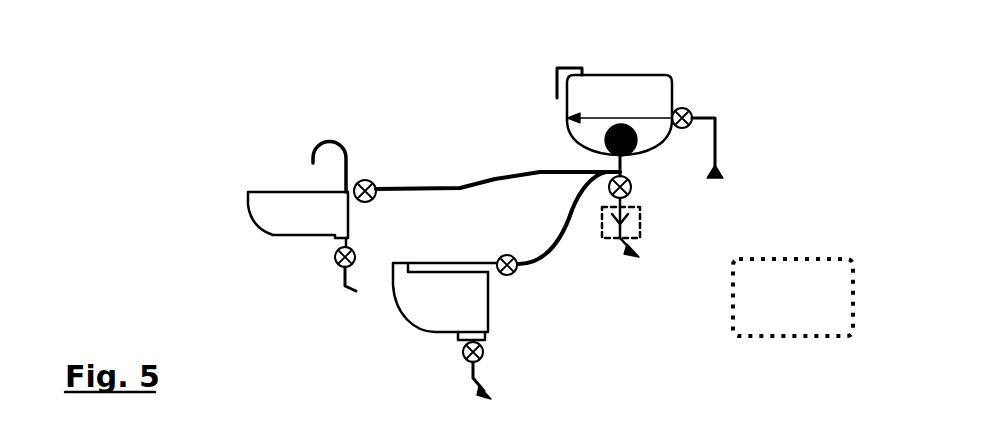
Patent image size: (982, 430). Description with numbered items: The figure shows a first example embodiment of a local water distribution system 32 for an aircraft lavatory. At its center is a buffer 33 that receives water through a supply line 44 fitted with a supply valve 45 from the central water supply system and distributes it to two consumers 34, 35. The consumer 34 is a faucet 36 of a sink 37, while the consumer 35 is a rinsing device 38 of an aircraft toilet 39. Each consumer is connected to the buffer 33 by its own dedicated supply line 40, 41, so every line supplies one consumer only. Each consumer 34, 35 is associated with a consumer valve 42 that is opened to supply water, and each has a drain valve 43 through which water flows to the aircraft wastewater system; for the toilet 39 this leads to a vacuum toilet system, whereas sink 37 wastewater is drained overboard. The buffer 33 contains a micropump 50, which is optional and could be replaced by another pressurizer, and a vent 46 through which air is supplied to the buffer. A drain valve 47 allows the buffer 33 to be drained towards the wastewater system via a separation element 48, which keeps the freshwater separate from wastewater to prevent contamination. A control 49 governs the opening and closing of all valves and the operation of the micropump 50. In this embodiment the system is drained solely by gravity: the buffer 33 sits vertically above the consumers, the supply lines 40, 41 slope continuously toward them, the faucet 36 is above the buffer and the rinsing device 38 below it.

The local water distribution system 32 is at (222, 121).
The buffer 33 is at (672, 97).
The consumer 34 is at (251, 167).
The faucet 36 is at (340, 169).
The consumer 35 is at (442, 237).
The rinsing device 38 is at (449, 264).
The sink 37 is at (285, 230).
The aircraft toilet 39 is at (430, 312).
The supply line 40 is at (461, 187).
The supply line 41 is at (560, 250).
The consumer valve 42 is at (367, 182).
The drain valve 43 is at (335, 257).
The supply line 44 is at (717, 135).
The supply valve 45 is at (692, 113).
The vent 46 is at (583, 67).
The drain valve 47 is at (632, 182).
The separation element 48 is at (642, 232).
The control 49 is at (809, 310).
The micropump 50 is at (605, 142).